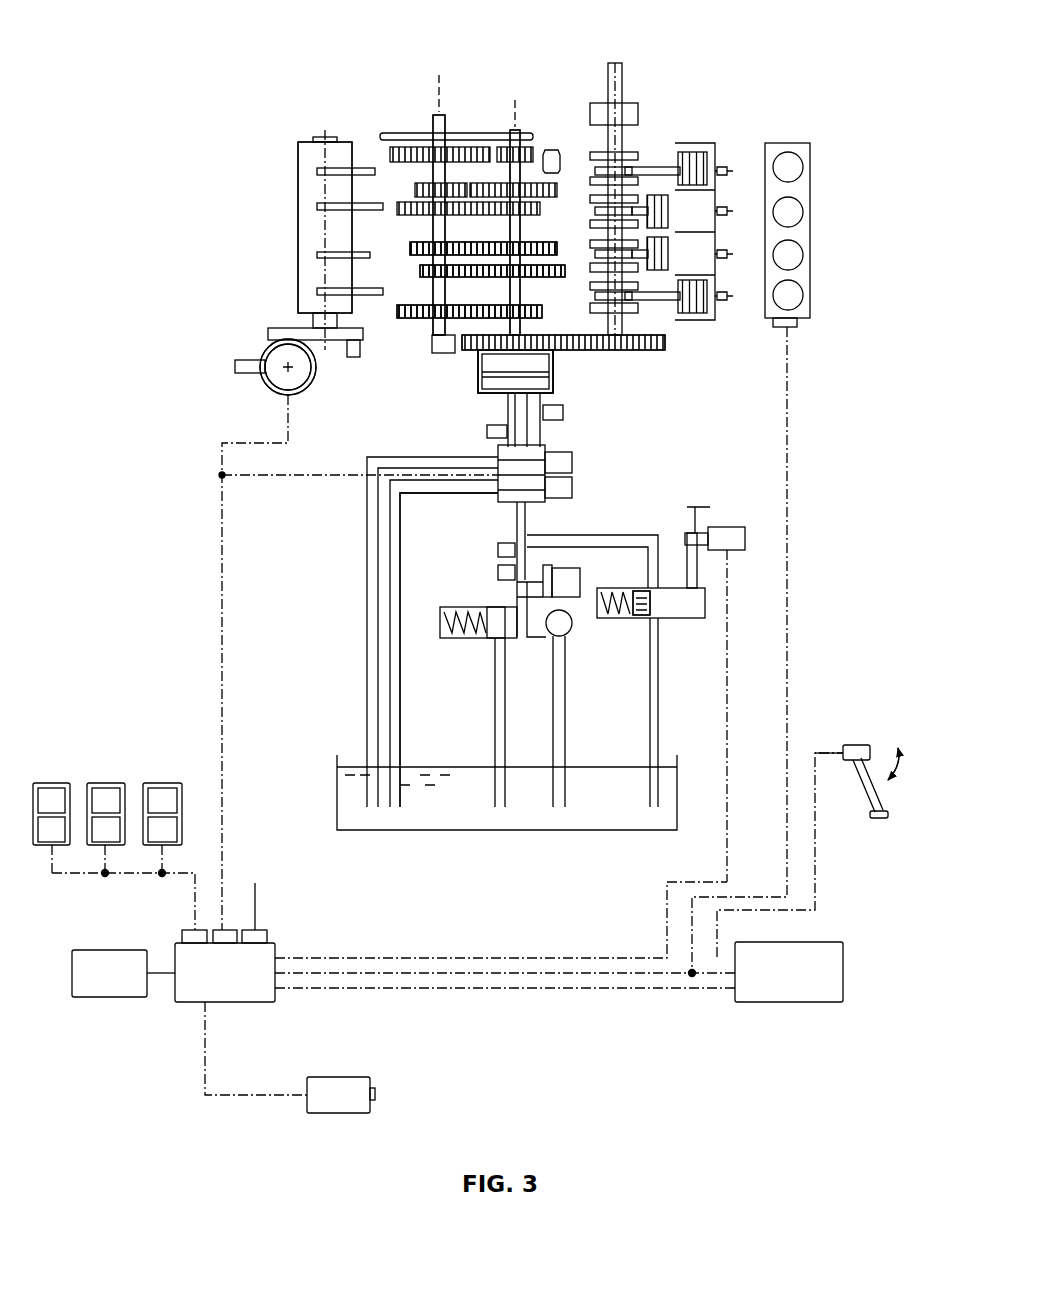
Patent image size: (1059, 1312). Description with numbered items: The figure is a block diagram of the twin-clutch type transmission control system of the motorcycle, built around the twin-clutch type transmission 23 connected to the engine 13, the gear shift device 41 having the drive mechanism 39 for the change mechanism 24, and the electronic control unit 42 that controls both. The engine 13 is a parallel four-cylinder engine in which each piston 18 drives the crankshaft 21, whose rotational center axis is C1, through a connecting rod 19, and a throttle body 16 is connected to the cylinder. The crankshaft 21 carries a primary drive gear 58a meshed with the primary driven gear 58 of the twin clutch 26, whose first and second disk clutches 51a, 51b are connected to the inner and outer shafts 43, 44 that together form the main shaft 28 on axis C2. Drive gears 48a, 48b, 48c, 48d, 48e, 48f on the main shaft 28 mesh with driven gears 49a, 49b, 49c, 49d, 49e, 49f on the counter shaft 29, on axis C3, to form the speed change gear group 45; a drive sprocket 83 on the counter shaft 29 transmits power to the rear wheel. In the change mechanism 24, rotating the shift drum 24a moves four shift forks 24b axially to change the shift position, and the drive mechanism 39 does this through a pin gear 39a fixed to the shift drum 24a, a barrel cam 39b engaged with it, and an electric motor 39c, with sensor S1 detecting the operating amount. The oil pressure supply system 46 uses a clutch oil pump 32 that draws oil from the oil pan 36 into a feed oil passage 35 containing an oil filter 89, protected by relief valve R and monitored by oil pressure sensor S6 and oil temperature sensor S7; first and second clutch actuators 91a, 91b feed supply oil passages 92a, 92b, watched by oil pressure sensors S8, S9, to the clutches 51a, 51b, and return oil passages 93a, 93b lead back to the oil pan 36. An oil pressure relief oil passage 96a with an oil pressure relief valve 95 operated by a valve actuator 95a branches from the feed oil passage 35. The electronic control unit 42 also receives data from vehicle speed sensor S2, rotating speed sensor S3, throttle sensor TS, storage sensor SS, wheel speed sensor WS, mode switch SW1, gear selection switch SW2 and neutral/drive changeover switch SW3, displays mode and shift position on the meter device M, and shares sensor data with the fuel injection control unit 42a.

The engine 13 is at (738, 100).
The throttle body 16 is at (790, 143).
The piston 18 is at (684, 150).
The connecting rod 19 is at (655, 168).
The crankshaft 21 is at (607, 140).
The twin-clutch type transmission 23 is at (695, 405).
The change mechanism 24 is at (290, 208).
The shift drum 24a is at (298, 150).
The shift forks 24b is at (340, 206).
The twin clutch 26 is at (688, 413).
The main shaft 28 is at (650, 355).
The counter shaft 29 is at (433, 292).
The clutch oil pump 32 is at (552, 636).
The feed oil passage 35 is at (560, 548).
The oil pan 36 is at (598, 831).
The drive mechanism 39 is at (250, 348).
The pin gear 39a is at (356, 357).
The barrel cam 39b is at (285, 392).
The electric motor 39c is at (262, 378).
The gear shift device 41 is at (160, 290).
The electronic control unit 42 is at (185, 1004).
The ECU for fuel injection system 42a is at (785, 1003).
The inner shaft 43 is at (557, 378).
The outer shaft 44 is at (557, 360).
The speed change gear group 45 is at (527, 135).
The oil pressure supply system 46 is at (653, 490).
The drive gear 48a is at (495, 145).
The drive gear 48b is at (525, 315).
The drive gear 48c is at (527, 212).
The drive gear 48d is at (440, 250).
The drive gear 48e is at (490, 180).
The drive gear 48f is at (500, 282).
The driven gear 49a is at (420, 150).
The driven gear 49b is at (410, 310).
The driven gear 49c is at (410, 190).
The driven gear 49d is at (530, 248).
The driven gear 49e is at (410, 185).
The driven gear 49f is at (430, 270).
The first disk clutch 51a is at (567, 337).
The second disk clutch 51b is at (527, 328).
The primary driven gear 58 is at (485, 350).
The primary drive gear 58a is at (667, 343).
The drive sprocket 83 is at (468, 140).
The oil filter 89 is at (575, 598).
The first clutch actuator 91a is at (572, 465).
The second clutch actuator 91b is at (572, 490).
The first supply oil passage 92a is at (508, 410).
The second supply oil passage 92b is at (530, 432).
The return oil passage 93a is at (367, 607).
The return oil passage 93b is at (400, 713).
The oil pressure relief valve 95 is at (680, 619).
The valve actuator 95a is at (737, 527).
The oil pressure relief oil passage 96a is at (625, 568).
The rotational center axis of crankshaft C1 is at (618, 85).
The rotational center axis of main shaft C2 is at (527, 203).
The rotational center axis of counter shaft C3 is at (458, 84).
The meter device M is at (103, 998).
The relief valve R is at (458, 640).
The sensor S1 is at (235, 366).
The vehicle speed sensor S2 is at (552, 150).
The rotating speed sensor S3 is at (432, 350).
The oil pressure sensor S6 is at (498, 550).
The oil temperature sensor S7 is at (498, 572).
The oil pressure sensor S8 is at (487, 432).
The oil pressure sensor S9 is at (569, 410).
The storage sensor SS is at (858, 745).
The mode switch SW1 is at (115, 783).
The gear selection switch SW2 is at (52, 783).
The neutral/drive changeover switch SW3 is at (172, 783).
The throttle sensor TS is at (798, 323).
The wheel speed sensor WS is at (337, 1113).